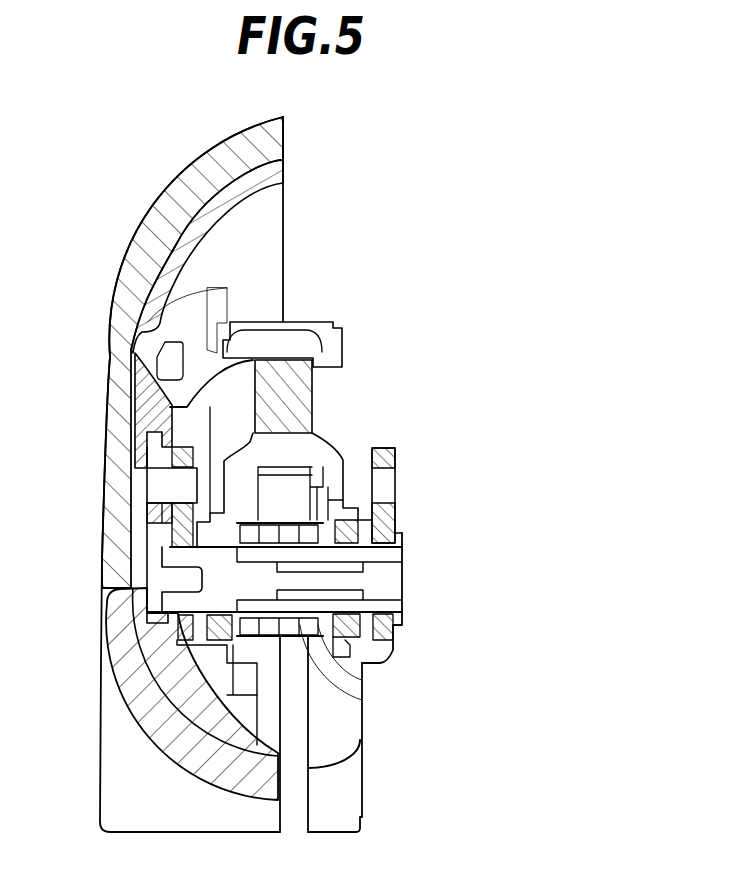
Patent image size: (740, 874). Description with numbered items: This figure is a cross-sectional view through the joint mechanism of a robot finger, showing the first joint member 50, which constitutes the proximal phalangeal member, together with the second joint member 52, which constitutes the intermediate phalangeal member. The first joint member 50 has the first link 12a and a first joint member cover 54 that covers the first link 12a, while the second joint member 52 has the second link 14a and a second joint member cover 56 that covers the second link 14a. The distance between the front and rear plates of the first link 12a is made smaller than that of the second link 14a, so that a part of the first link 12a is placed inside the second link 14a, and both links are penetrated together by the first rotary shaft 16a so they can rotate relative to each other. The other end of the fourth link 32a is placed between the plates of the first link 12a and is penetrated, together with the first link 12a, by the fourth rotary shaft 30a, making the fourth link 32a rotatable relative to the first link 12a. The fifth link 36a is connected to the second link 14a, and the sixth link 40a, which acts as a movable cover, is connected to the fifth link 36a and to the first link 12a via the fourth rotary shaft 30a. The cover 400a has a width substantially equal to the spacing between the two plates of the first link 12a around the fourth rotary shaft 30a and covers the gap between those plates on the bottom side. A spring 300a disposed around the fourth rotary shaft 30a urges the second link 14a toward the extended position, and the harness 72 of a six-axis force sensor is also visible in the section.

The first link 12a is at (395, 642).
The second link 14a is at (284, 212).
The first rotary shaft 16a is at (146, 478).
The fourth rotary shaft 30a is at (392, 578).
The fourth link 32a is at (325, 445).
The fifth link 36a is at (327, 322).
The sixth link 40a is at (407, 632).
The cover 400a is at (313, 618).
The first joint member 50 is at (122, 696).
The second joint member 52 is at (108, 317).
The first joint member cover 54 is at (107, 617).
The second joint member cover 56 is at (128, 256).
The harness 72 is at (303, 742).
The spring 300a is at (330, 690).